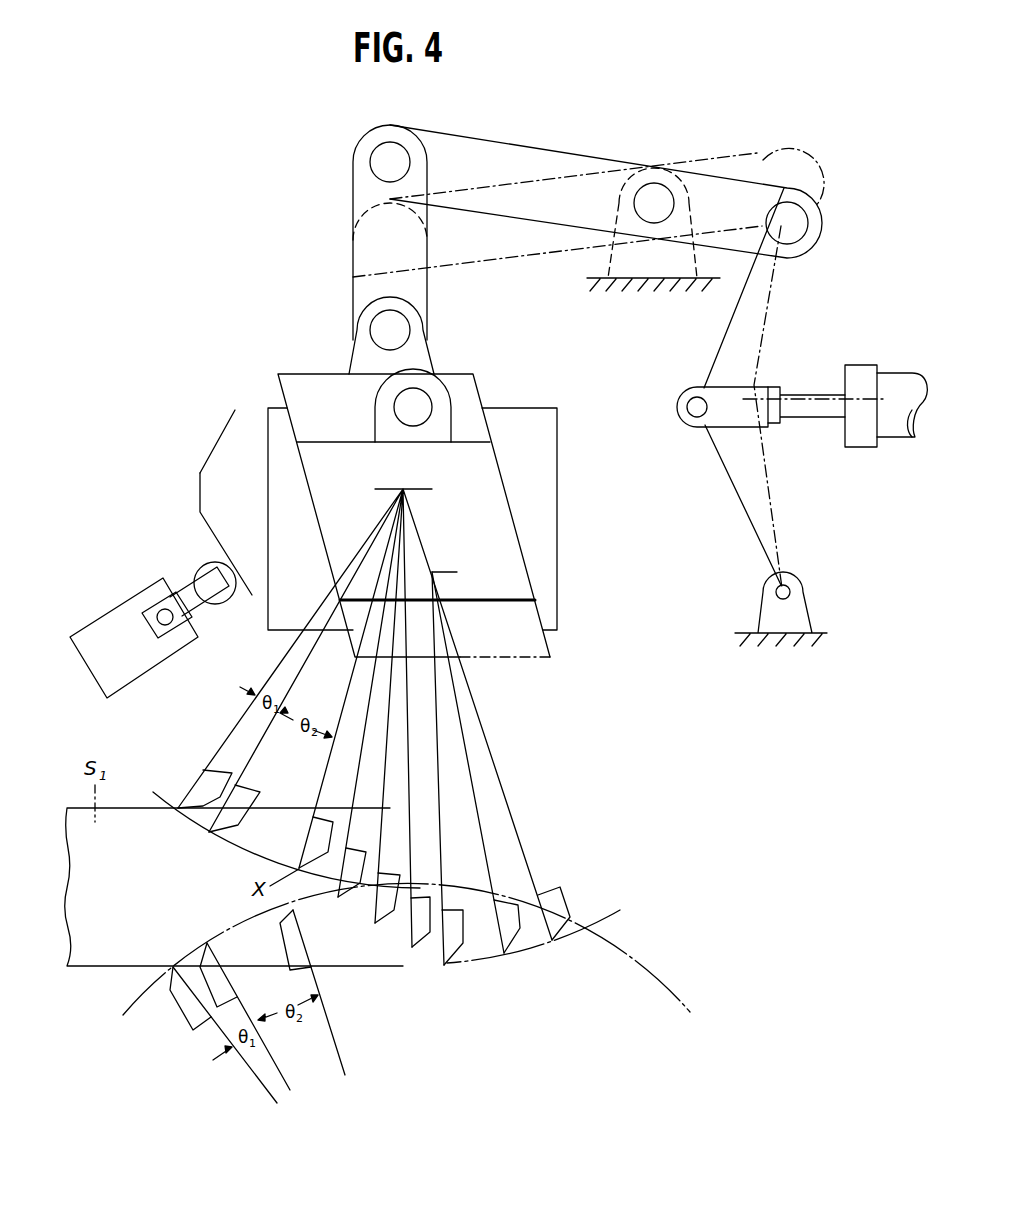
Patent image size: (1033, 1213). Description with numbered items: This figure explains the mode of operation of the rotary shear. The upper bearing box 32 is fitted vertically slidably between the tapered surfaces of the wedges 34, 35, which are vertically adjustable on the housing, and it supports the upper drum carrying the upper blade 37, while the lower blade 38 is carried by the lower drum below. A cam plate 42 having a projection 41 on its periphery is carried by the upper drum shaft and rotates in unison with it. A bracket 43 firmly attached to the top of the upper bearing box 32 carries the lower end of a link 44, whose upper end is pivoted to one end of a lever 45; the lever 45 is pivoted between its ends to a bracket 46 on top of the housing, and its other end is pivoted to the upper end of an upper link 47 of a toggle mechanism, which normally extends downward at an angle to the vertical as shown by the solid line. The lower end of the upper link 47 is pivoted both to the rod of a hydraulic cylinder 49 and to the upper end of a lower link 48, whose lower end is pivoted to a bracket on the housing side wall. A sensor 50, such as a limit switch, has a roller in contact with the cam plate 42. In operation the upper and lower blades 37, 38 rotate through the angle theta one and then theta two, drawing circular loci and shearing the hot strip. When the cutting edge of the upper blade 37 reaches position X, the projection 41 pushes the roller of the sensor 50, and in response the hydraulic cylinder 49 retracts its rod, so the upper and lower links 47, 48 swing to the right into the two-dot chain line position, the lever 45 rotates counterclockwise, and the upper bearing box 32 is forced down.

The upper bearing box 32 is at (467, 397).
The wedge 34 is at (282, 607).
The wedge 35 is at (542, 477).
The upper blade 37 is at (203, 770).
The lower blade 38 is at (187, 987).
The projection 41 is at (202, 490).
The cam plate 42 is at (257, 485).
The bracket 43 is at (365, 352).
The link 44 is at (355, 275).
The lever 45 is at (545, 160).
The bracket 46 is at (640, 268).
The upper link 47 is at (728, 349).
The lower link 48 is at (745, 520).
The hydraulic cylinder 49 is at (887, 377).
The sensor 50 is at (132, 607).